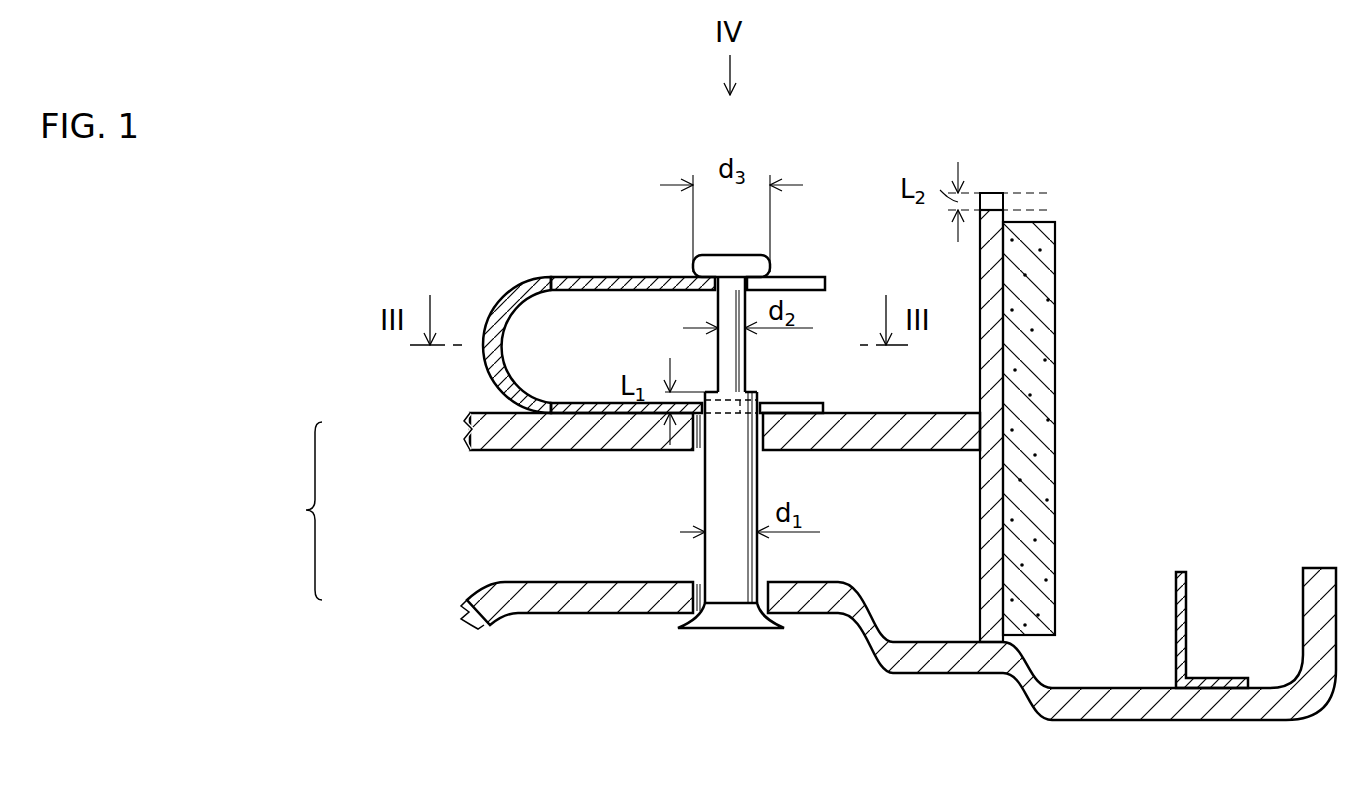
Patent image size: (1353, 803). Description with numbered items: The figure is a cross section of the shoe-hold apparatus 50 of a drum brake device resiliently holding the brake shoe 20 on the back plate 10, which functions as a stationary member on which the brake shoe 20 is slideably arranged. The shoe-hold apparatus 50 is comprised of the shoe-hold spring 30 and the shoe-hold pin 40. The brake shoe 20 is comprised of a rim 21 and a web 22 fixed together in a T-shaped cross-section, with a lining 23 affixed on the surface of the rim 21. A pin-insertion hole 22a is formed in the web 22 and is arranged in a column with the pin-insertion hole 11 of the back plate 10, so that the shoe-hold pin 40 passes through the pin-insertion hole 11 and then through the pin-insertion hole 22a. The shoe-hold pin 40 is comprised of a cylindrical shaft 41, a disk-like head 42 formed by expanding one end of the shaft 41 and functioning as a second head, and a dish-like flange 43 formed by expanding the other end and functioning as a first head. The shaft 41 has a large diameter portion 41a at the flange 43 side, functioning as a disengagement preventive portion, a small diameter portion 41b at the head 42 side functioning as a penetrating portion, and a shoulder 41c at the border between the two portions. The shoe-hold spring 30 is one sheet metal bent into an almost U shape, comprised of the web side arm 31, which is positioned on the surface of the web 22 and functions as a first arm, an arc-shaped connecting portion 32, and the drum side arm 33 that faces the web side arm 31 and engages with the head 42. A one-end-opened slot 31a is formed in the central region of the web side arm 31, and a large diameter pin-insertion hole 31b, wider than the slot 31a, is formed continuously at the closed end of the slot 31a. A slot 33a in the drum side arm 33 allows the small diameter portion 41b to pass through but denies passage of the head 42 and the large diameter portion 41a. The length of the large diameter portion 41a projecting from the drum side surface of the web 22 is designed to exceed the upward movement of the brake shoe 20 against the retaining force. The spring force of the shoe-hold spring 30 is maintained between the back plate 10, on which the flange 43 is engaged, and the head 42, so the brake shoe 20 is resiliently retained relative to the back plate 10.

The back plate 10 is at (581, 616).
The pin-insertion hole 11 is at (767, 594).
The brake shoe 20 is at (1021, 383).
The rim 21 is at (979, 518).
The web 22 is at (910, 451).
The pin-insertion hole 22a is at (766, 441).
The lining 23 is at (1056, 402).
The shoe-hold spring 30 is at (611, 341).
The web side arm 31 is at (606, 403).
The slot 31a is at (803, 406).
The large diameter pin-insertion hole 31b is at (742, 398).
The connecting portion 32 is at (497, 302).
The drum side arm 33 is at (611, 277).
The slot 33a is at (790, 281).
The shoe-hold pin 40 is at (553, 447).
The shaft 41 is at (696, 440).
The large diameter portion 41a is at (705, 476).
The small diameter portion 41b is at (718, 323).
The shoulder 41c is at (718, 389).
The head 42 is at (730, 256).
The flange 43 is at (737, 629).
The shoe-hold apparatus 50 is at (292, 511).